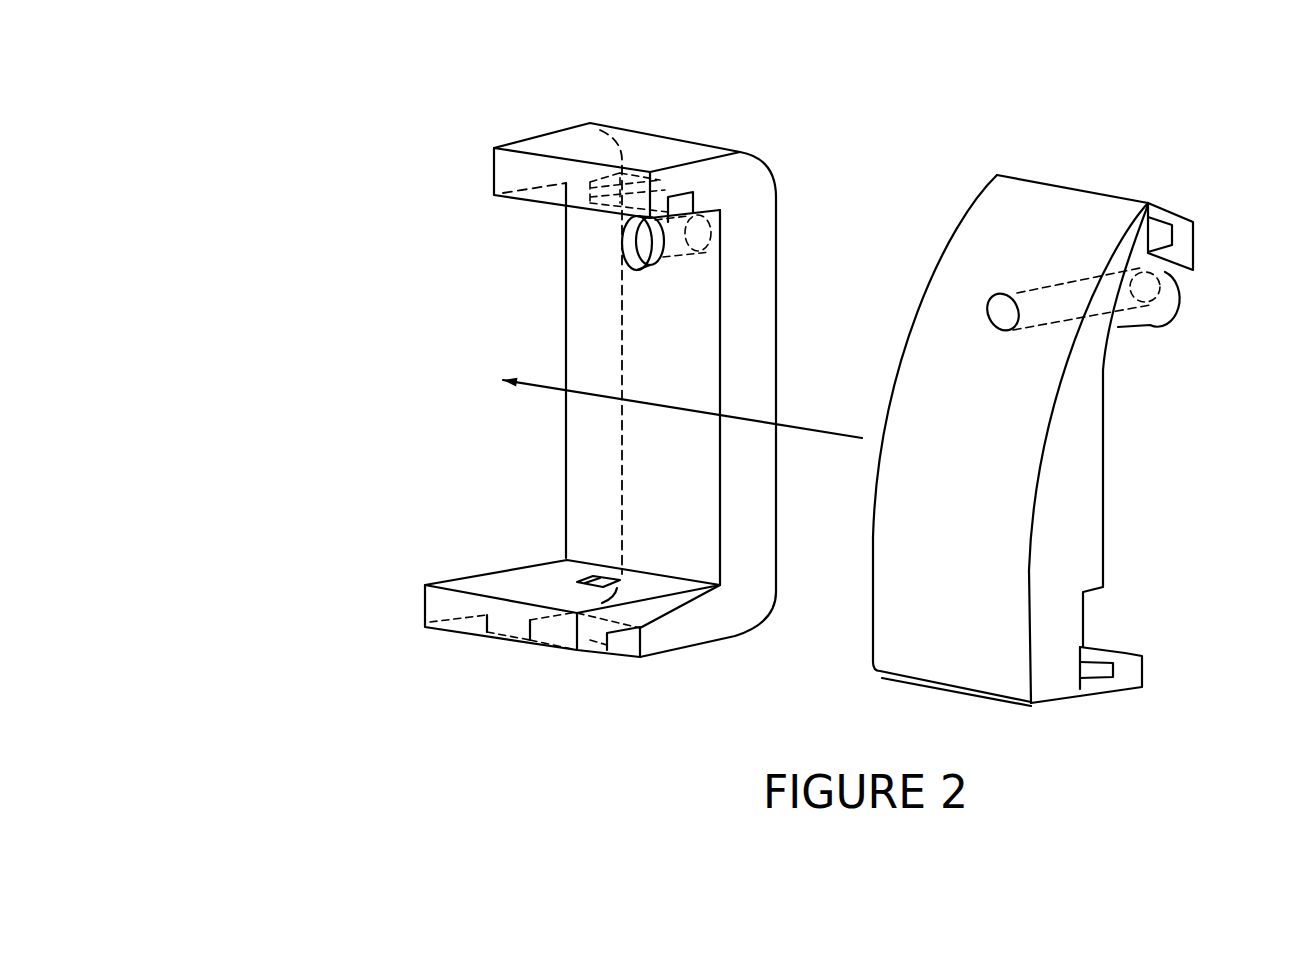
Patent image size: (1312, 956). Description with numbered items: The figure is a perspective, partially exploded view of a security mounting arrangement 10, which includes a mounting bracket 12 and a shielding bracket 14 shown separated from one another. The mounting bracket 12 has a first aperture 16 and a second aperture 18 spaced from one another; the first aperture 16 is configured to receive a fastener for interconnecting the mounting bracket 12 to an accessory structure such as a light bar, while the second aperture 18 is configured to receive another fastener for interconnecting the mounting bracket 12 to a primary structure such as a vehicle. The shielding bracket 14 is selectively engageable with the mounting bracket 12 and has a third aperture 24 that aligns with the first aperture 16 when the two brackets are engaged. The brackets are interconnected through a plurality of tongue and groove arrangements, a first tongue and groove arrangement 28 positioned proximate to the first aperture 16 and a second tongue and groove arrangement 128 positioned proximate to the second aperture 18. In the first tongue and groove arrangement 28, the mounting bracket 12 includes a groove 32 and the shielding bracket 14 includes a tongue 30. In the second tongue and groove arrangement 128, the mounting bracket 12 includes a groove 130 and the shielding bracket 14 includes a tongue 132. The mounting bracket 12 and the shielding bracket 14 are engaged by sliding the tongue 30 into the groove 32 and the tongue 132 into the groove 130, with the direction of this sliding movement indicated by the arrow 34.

The security mounting arrangement 10 is at (363, 255).
The mounting bracket 12 is at (448, 645).
The shielding bracket 14 is at (1192, 123).
The first aperture 16 is at (625, 248).
The second aperture 18 is at (593, 577).
The third aperture 24 is at (997, 295).
The first tongue and groove arrangement 28 is at (488, 163).
The tongue 30 is at (1165, 222).
The groove 32 is at (608, 200).
The arrow 34 is at (552, 382).
The second tongue and groove arrangement 128 is at (405, 592).
The groove 130 is at (594, 641).
The tongue 132 is at (1090, 678).